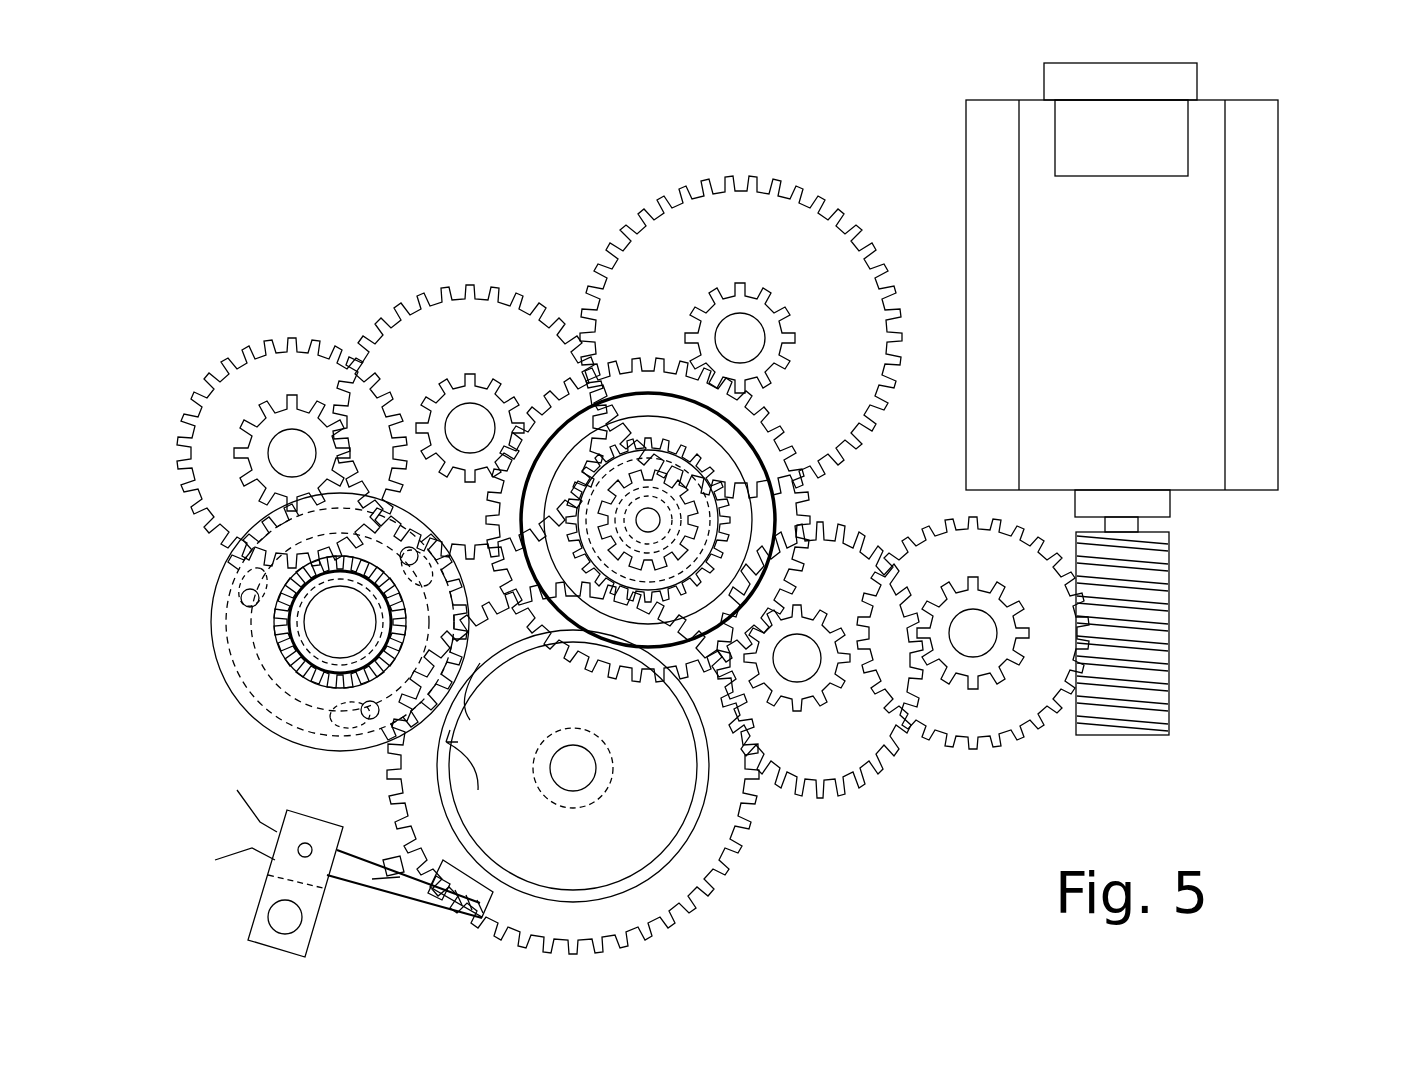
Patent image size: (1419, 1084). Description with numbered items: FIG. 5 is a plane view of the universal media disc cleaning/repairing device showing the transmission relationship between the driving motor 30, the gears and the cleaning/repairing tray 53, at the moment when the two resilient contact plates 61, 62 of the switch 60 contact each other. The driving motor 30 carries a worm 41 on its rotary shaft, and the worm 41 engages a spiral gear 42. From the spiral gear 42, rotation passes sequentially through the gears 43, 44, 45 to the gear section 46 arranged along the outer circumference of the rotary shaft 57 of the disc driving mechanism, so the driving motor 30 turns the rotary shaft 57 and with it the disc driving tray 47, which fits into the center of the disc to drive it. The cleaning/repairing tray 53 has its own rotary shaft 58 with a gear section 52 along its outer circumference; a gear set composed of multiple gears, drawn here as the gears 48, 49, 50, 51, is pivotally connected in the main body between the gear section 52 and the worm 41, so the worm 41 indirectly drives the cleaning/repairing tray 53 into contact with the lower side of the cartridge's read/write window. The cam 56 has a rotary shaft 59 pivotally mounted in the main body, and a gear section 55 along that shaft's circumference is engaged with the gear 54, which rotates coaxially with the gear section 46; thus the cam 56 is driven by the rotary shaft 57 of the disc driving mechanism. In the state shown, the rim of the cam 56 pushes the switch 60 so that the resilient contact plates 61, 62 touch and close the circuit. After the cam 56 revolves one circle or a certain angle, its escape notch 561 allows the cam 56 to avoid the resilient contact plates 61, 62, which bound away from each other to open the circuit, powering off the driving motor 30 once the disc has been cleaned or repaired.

The driving motor 30 is at (1299, 298).
The worm 41 is at (1173, 630).
The spiral gear 42 is at (1000, 743).
The gear 43 is at (970, 668).
The gear 44 is at (870, 770).
The gear 45 is at (830, 690).
The gear section 46 is at (808, 510).
The disc driving tray 47 is at (688, 505).
The pinion 48 is at (447, 390).
The gear 49 is at (470, 285).
The pinion 50 is at (250, 425).
The gear 51 is at (187, 512).
The gear section 52 is at (290, 631).
The cleaning/repairing tray 53 is at (233, 663).
The gear 54 is at (661, 445).
The gear section 55 is at (733, 858).
The cam 56 is at (440, 771).
The escape notch 561 is at (483, 741).
The rotary shaft 57 is at (645, 520).
The rotary shaft 58 is at (340, 622).
The rotary shaft 59 is at (572, 768).
The switch 60 is at (265, 893).
The resilient contact plate 61 is at (443, 907).
The resilient contact plate 62 is at (487, 895).